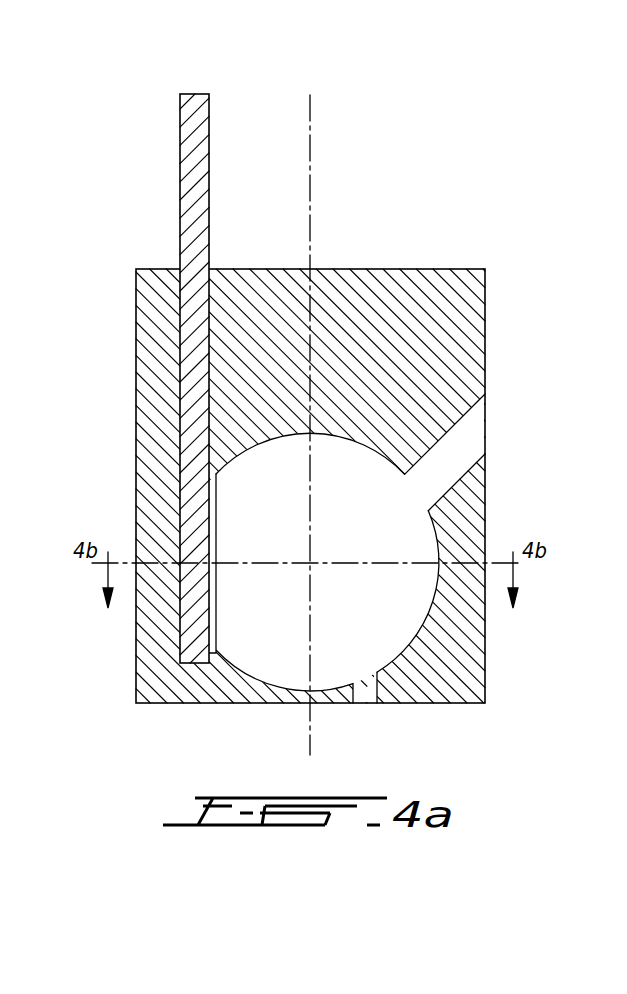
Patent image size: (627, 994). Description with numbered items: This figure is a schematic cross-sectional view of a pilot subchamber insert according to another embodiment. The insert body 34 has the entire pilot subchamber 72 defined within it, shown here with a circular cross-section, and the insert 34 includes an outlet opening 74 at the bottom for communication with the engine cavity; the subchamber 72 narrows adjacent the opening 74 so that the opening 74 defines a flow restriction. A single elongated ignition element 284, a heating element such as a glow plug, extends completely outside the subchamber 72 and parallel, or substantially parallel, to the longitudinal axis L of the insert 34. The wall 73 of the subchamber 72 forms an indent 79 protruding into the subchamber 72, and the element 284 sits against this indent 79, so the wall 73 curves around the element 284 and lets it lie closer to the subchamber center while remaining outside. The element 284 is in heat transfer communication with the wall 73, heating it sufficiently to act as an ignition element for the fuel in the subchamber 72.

The insert body 34 is at (497, 260).
The elongated ignition element 284 is at (198, 229).
The pilot subchamber 72 is at (364, 500).
The subchamber wall 73 is at (438, 531).
The outlet opening 74 is at (363, 698).
The indent 79 is at (213, 617).
The longitudinal axis L is at (312, 166).